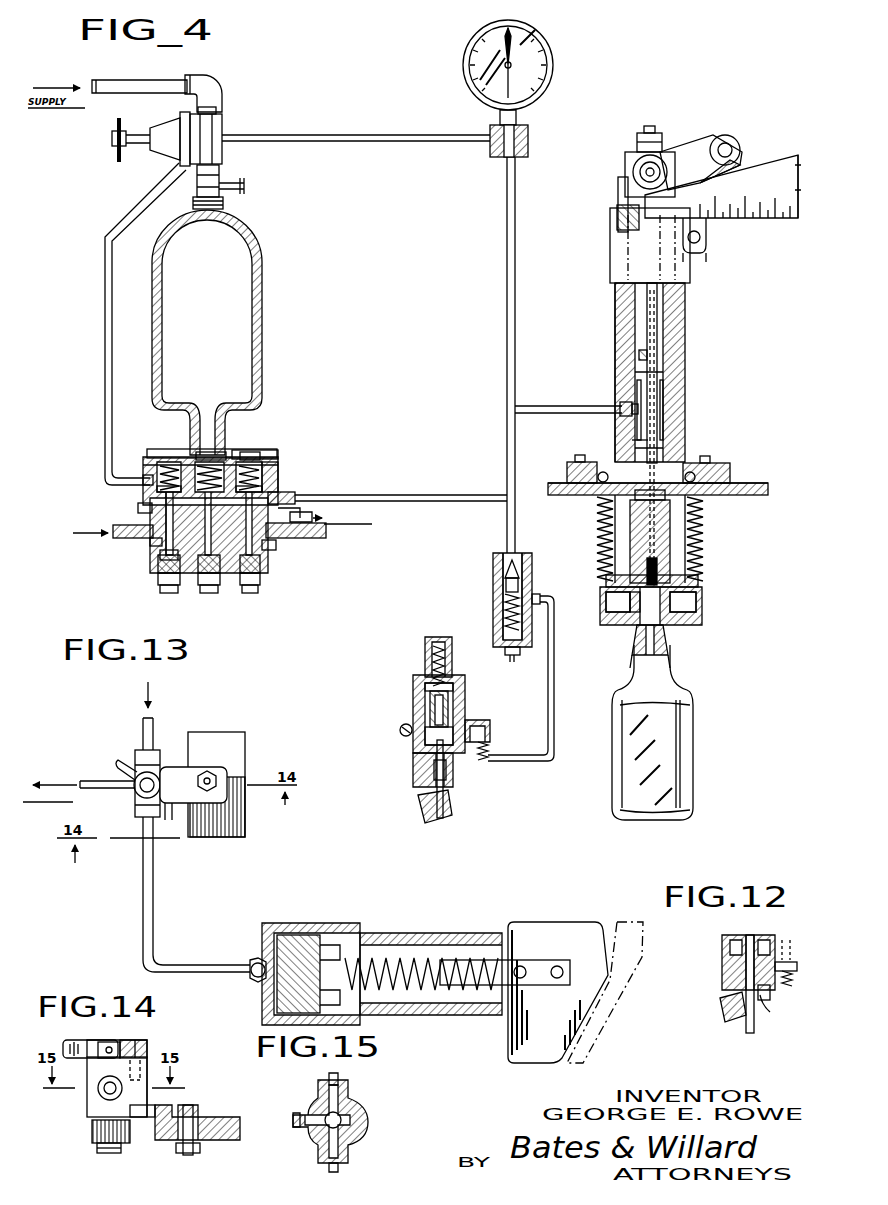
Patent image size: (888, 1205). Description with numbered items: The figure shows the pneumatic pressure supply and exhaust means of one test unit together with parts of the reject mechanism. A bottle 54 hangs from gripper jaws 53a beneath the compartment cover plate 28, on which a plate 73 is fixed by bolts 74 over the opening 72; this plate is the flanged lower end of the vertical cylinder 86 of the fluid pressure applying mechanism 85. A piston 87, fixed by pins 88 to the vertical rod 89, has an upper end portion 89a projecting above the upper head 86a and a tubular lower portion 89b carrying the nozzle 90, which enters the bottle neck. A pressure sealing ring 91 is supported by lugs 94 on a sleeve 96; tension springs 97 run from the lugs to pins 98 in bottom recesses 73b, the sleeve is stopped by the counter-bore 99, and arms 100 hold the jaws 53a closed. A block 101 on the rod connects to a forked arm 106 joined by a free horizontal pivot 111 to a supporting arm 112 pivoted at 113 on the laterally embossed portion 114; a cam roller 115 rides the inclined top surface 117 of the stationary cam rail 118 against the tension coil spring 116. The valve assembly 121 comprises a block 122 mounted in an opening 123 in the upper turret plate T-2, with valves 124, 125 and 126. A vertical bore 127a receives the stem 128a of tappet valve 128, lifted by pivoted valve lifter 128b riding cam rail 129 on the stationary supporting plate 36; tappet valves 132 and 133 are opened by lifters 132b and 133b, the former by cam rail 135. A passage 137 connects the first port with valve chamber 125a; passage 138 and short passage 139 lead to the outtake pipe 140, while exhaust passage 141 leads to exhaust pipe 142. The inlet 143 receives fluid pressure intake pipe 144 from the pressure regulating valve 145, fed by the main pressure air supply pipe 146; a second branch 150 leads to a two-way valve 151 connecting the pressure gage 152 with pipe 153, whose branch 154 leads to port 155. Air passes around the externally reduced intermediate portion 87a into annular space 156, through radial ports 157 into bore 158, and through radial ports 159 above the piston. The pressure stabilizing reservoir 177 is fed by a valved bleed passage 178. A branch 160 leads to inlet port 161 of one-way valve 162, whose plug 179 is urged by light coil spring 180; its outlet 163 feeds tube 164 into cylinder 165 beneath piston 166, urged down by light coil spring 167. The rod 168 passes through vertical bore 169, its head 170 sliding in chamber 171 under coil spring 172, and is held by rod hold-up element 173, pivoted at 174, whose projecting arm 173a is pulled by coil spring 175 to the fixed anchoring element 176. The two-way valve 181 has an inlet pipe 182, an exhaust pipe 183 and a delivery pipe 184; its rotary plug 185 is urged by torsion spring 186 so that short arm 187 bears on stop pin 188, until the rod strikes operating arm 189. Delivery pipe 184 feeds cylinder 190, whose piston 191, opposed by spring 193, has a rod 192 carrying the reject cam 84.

In FIG. 4, the compartment cover plate 28 is at (551, 496).
In FIG. 13, the stationary supporting plate 36 is at (250, 760).
In FIG. 14, the stationary supporting plate 36 is at (228, 1117).
In FIG. 4, the gripper jaws 53a is at (668, 632).
In FIG. 4, the bottle 54 is at (695, 757).
In FIG. 4, the opening in the compartment cover plate 72 is at (671, 520).
In FIG. 4, the plate 73 is at (730, 478).
In FIG. 4, the bottom recesses 73b is at (576, 456).
In FIG. 4, the bolts 74 is at (567, 470).
In FIG. 13, the reject cam 84 is at (552, 930).
In FIG. 4, the fluid pressure applying mechanism 85 is at (740, 384).
In FIG. 4, the vertical cylinder 86 is at (685, 330).
In FIG. 4, the upper head of the cylinder 86a is at (610, 260).
In FIG. 4, the piston 87 is at (667, 400).
In FIG. 4, the externally reduced intermediate portion 87a is at (660, 415).
In FIG. 4, the pins 88 is at (670, 388).
In FIG. 4, the vertical rod 89 is at (660, 310).
In FIG. 4, the upper end portion of the piston rod 89a is at (646, 127).
In FIG. 4, the tubular lower portion of the piston rod 89b is at (659, 573).
In FIG. 4, the nozzle 90 is at (669, 652).
In FIG. 4, the pressure sealing ring 91 is at (702, 604).
In FIG. 4, the lugs 94 is at (630, 602).
In FIG. 4, the sleeve 96 is at (700, 582).
In FIG. 4, the tension springs 97 is at (597, 516).
In FIG. 4, the pins 98 is at (596, 478).
In FIG. 4, the counter-bore 99 is at (622, 520).
In FIG. 4, the arms 100 is at (697, 612).
In FIG. 4, the block 101 is at (633, 150).
In FIG. 4, the forked arm 106 is at (695, 140).
In FIG. 4, the free horizontal pivot 111 is at (734, 137).
In FIG. 4, the supporting arm 112 is at (705, 226).
In FIG. 4, the pivot of the supporting arm 113 is at (700, 238).
In FIG. 4, the laterally embossed portion of the cylinder 114 is at (706, 254).
In FIG. 4, the cam roller 115 is at (633, 170).
In FIG. 4, the tension coil spring 116 is at (617, 222).
In FIG. 4, the inclined top surface 117 is at (768, 160).
In FIG. 4, the stationary cam rail 118 is at (776, 220).
In FIG. 4, the valve assembly 121 is at (285, 492).
In FIG. 4, the block 122 is at (113, 530).
In FIG. 4, the opening in the upper turret plate 123 is at (150, 541).
In FIG. 4, the valve 124 is at (150, 452).
In FIG. 4, the valve 125 is at (205, 450).
In FIG. 4, the valve chamber 125a is at (245, 452).
In FIG. 4, the valve 126 is at (272, 452).
In FIG. 4, the vertical bore 127a is at (160, 555).
In FIG. 4, the tappet valve 128 is at (150, 492).
In FIG. 4, the valve stem 128a is at (166, 560).
In FIG. 4, the pivoted valve lifter 128b is at (160, 578).
In FIG. 4, the cam rail 129 is at (168, 594).
In FIG. 4, the tappet valve 132 is at (247, 452).
In FIG. 4, the pivoted valve lifter 132b is at (250, 586).
In FIG. 4, the tappet valve 133 is at (278, 490).
In FIG. 4, the pivoted valve lifter 133b is at (262, 580).
In FIG. 4, the cam rail 135 is at (208, 594).
In FIG. 4, the passage 137 is at (150, 508).
In FIG. 4, the passage 138 is at (272, 545).
In FIG. 4, the short passage 139 is at (272, 462).
In FIG. 4, the outtake pipe 140 is at (426, 500).
In FIG. 4, the exhaust passage 141 is at (305, 539).
In FIG. 4, the exhaust pipe 142 is at (297, 499).
In FIG. 4, the inlet 143 is at (143, 482).
In FIG. 4, the fluid pressure intake pipe 144 is at (128, 213).
In FIG. 4, the pressure regulating valve 145 is at (222, 120).
In FIG. 4, the main pressure air supply pipe 146 is at (158, 64).
In FIG. 4, the second branch 150 is at (403, 136).
In FIG. 4, the two-way valve 151 is at (493, 157).
In FIG. 4, the pressure gage 152 is at (464, 50).
In FIG. 4, the pipe 153 is at (507, 250).
In FIG. 4, the branch 154 is at (534, 407).
In FIG. 4, the port 155 is at (622, 406).
In FIG. 4, the annular space 156 is at (630, 440).
In FIG. 4, the radial ports 157 is at (622, 415).
In FIG. 4, the bore 158 is at (657, 430).
In FIG. 4, the radial ports 159 is at (663, 352).
In FIG. 4, the branch 160 is at (507, 542).
In FIG. 4, the inlet port 161 is at (493, 570).
In FIG. 4, the one-way valve 162 is at (490, 600).
In FIG. 4, the outlet 163 is at (540, 598).
In FIG. 4, the tube 164 is at (545, 599).
In FIG. 12, the tube 164 is at (800, 962).
In FIG. 4, the cylinder 165 is at (411, 691).
In FIG. 4, the piston 166 is at (458, 686).
In FIG. 4, the light coil spring 167 is at (425, 656).
In FIG. 4, the rod 168 is at (427, 763).
In FIG. 12, the rod 168 is at (755, 1028).
In FIG. 4, the vertical bore 169 is at (430, 777).
In FIG. 12, the vertical bore 169 is at (730, 970).
In FIG. 4, the head 170 is at (400, 743).
In FIG. 4, the chamber 171 is at (435, 722).
In FIG. 4, the coil spring 172 is at (432, 705).
In FIG. 4, the rod hold-up element 173 is at (418, 811).
In FIG. 12, the rod hold-up element 173 is at (730, 1016).
In FIG. 4, the projecting arm 173a is at (456, 795).
In FIG. 12, the projecting arm 173a is at (770, 1000).
In FIG. 4, the pivot 174 is at (446, 800).
In FIG. 12, the pivot 174 is at (763, 1006).
In FIG. 4, the coil spring 175 is at (482, 742).
In FIG. 12, the coil spring 175 is at (786, 986).
In FIG. 4, the fixed anchoring element 176 is at (472, 727).
In FIG. 4, the pressure stabilizing reservoir 177 is at (262, 246).
In FIG. 4, the valved bleed passage 178 is at (222, 183).
In FIG. 4, the plug 179 is at (506, 584).
In FIG. 4, the light coil spring 180 is at (505, 614).
In FIG. 13, the two-way valve 181 is at (134, 796).
In FIG. 14, the two-way valve 181 is at (142, 1105).
In FIG. 15, the two-way valve 181 is at (368, 1137).
In FIG. 13, the inlet pipe 182 is at (143, 728).
In FIG. 15, the inlet pipe 182 is at (340, 1080).
In FIG. 13, the exhaust pipe 183 is at (90, 781).
In FIG. 15, the exhaust pipe 183 is at (302, 1116).
In FIG. 13, the delivery pipe 184 is at (143, 878).
In FIG. 14, the delivery pipe 184 is at (108, 1093).
In FIG. 15, the delivery pipe 184 is at (328, 1168).
In FIG. 14, the rotary plug 185 is at (94, 1126).
In FIG. 15, the rotary plug 185 is at (352, 1115).
In FIG. 14, the torsion spring 186 is at (100, 1145).
In FIG. 13, the short arm 187 is at (182, 773).
In FIG. 14, the short arm 187 is at (140, 1044).
In FIG. 13, the stop pin 188 is at (172, 803).
In FIG. 14, the stop pin 188 is at (147, 1052).
In FIG. 13, the operating arm 189 is at (118, 762).
In FIG. 14, the operating arm 189 is at (70, 1042).
In FIG. 13, the cylinder 190 is at (320, 925).
In FIG. 13, the piston 191 is at (280, 952).
In FIG. 13, the rod 192 is at (478, 960).
In FIG. 13, the spring 193 is at (410, 938).
In FIG. 4, the upper turret plate T-2 is at (71, 535).